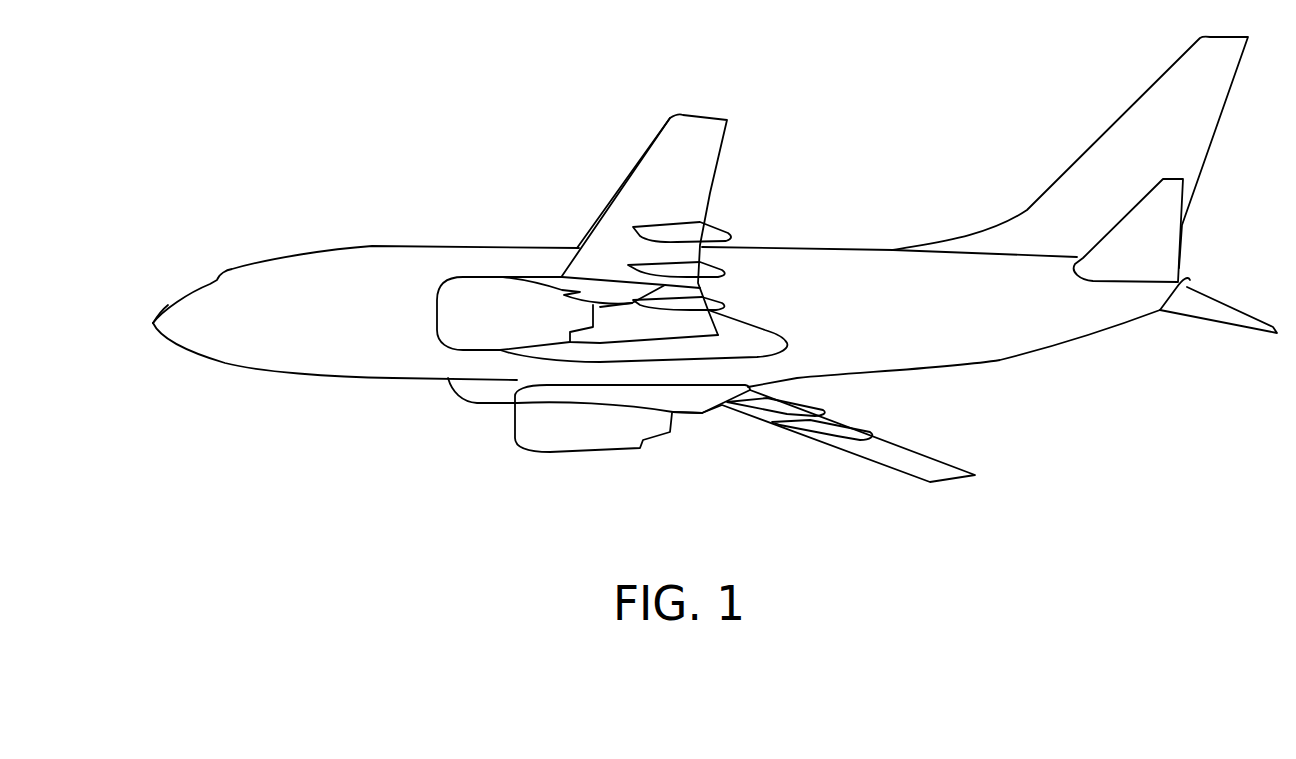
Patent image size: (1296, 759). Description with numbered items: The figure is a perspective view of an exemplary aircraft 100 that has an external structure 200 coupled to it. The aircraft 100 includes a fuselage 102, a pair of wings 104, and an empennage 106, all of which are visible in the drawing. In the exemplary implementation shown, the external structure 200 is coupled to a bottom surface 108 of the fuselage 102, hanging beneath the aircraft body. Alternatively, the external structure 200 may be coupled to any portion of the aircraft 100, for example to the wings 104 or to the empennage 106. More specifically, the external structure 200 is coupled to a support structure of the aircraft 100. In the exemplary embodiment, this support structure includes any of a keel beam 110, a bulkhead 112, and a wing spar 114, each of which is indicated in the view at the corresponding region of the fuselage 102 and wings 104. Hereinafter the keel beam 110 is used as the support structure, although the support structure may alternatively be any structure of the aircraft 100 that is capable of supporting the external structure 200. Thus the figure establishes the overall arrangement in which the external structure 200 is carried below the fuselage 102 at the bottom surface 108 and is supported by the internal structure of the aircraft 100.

The aircraft 100 is at (220, 134).
The fuselage 102 is at (383, 247).
The wings 104 is at (710, 193).
The empennage 106 is at (1030, 147).
The bottom surface 108 is at (246, 386).
The keel beam 110 is at (392, 377).
The bulkhead 112 is at (853, 265).
The wing spar 114 is at (643, 153).
The external structure 200 is at (477, 405).